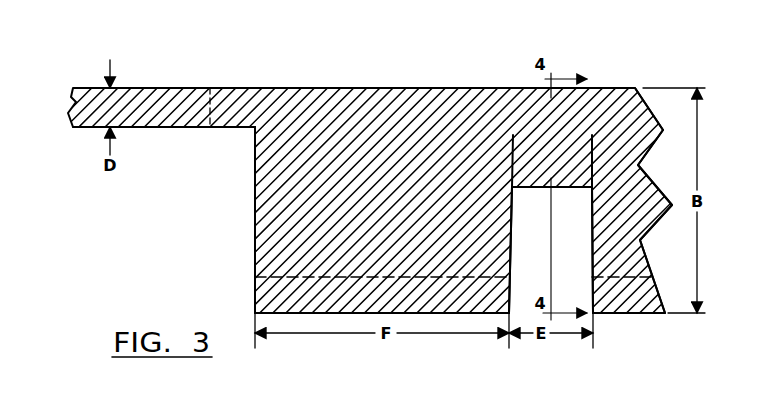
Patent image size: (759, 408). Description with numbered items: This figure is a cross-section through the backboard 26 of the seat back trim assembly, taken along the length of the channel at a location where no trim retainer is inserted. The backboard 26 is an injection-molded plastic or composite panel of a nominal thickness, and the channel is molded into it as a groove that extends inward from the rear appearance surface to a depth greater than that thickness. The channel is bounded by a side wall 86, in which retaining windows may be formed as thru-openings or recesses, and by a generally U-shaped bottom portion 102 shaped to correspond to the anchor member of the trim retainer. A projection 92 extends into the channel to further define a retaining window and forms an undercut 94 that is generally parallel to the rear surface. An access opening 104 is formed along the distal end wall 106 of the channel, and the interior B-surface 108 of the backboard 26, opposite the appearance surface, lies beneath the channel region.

The backboard 26 is at (403, 128).
The side wall 86 is at (620, 122).
The projection 92 is at (533, 145).
The undercut 94 is at (560, 190).
The U-shaped bottom portion 102 is at (290, 295).
The access opening 104 is at (240, 170).
The distal end wall 106 is at (257, 192).
The B-surface 108 is at (175, 128).